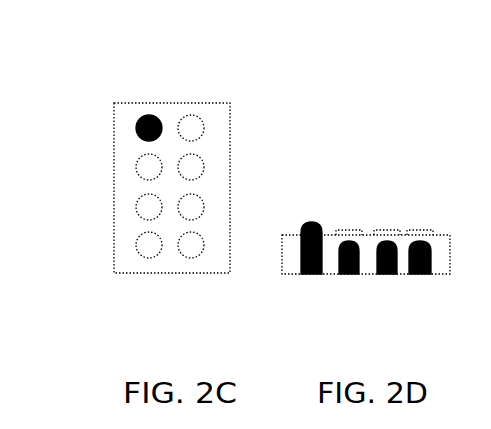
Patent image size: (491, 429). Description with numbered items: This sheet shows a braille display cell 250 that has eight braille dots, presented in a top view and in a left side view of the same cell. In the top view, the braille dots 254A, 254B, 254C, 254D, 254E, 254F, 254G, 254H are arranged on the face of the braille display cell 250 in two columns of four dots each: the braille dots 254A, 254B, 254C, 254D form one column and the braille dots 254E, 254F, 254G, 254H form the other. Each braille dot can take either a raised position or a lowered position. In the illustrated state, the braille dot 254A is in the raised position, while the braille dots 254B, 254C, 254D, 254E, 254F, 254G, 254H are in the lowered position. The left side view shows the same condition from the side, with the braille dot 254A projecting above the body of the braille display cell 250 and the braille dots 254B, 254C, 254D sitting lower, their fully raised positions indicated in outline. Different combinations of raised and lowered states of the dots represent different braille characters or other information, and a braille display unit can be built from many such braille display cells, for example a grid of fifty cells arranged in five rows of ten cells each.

In FIG. 2C, the braille display cell 250 is at (189, 52).
In FIG. 2C, the braille dot 254A is at (136, 126).
In FIG. 2D, the braille dot 254A is at (310, 275).
In FIG. 2C, the braille dot 254B is at (136, 165).
In FIG. 2D, the braille dot 254B is at (349, 275).
In FIG. 2C, the braille dot 254C is at (136, 205).
In FIG. 2D, the braille dot 254C is at (387, 275).
In FIG. 2C, the braille dot 254D is at (136, 243).
In FIG. 2D, the braille dot 254D is at (420, 275).
In FIG. 2C, the braille dot 254E is at (204, 131).
In FIG. 2C, the braille dot 254F is at (204, 169).
In FIG. 2C, the braille dot 254G is at (204, 208).
In FIG. 2C, the braille dot 254H is at (204, 246).